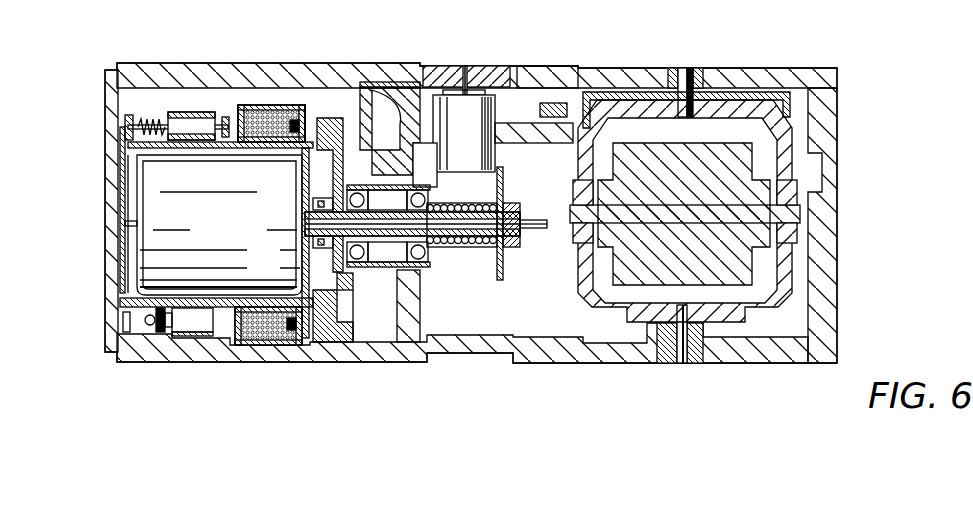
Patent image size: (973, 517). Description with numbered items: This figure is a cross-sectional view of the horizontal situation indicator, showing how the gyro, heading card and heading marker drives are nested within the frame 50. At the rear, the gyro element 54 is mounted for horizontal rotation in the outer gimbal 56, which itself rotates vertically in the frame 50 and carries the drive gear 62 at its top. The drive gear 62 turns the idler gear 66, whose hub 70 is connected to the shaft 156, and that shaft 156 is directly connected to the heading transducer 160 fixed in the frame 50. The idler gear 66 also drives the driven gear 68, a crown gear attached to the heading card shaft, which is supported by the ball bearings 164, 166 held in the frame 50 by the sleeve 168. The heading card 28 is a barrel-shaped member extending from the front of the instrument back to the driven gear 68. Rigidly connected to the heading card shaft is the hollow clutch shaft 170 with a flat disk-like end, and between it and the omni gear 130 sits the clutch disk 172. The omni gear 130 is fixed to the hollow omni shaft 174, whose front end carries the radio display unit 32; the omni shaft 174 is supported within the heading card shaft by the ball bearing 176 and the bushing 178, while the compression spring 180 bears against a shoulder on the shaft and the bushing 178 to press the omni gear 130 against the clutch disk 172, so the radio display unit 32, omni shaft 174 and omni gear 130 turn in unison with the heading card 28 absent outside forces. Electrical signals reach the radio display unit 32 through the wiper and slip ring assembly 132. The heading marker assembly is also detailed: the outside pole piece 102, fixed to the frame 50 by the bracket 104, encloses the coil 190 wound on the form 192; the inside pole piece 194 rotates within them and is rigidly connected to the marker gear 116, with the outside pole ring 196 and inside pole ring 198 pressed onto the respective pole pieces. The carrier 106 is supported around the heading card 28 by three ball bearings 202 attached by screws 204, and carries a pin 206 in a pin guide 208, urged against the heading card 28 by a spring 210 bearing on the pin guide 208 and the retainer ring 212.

The heading card 28 is at (123, 323).
The radio display unit 32 is at (222, 238).
The frame 50 is at (628, 70).
The gyro element 54 is at (723, 237).
The outer gimbal 56 is at (800, 153).
The drive gear 62 is at (727, 97).
The idler gear 66 is at (545, 72).
The driven gear 68 is at (347, 127).
The hub 70 is at (500, 72).
The outside pole piece 102 is at (243, 107).
The bracket 104 is at (288, 93).
The carrier 106 is at (188, 112).
The marker gear 116 is at (343, 77).
The omni gear 130 is at (503, 270).
The wiper and slip ring assembly 132 is at (535, 225).
The shaft 156 is at (468, 67).
The heading transducer 160 is at (480, 122).
The ball bearing 164 is at (350, 267).
The ball bearing 166 is at (428, 272).
The sleeve 168 is at (355, 183).
The clutch shaft 170 is at (442, 250).
The clutch disk 172 is at (488, 248).
The omni shaft 174 is at (302, 262).
The ball bearing 176 is at (323, 207).
The bushing 178 is at (478, 237).
The compression spring 180 is at (470, 207).
The coil 190 is at (252, 108).
The form 192 is at (272, 113).
The inside pole piece 194 is at (262, 135).
The outside pole ring 196 is at (300, 130).
The inside pole ring 198 is at (305, 132).
The ball bearing 202 is at (157, 340).
The screw 204 is at (147, 318).
The pin 206 is at (205, 127).
The pin guide 208 is at (180, 137).
The spring 210 is at (135, 118).
The retainer ring 212 is at (143, 135).